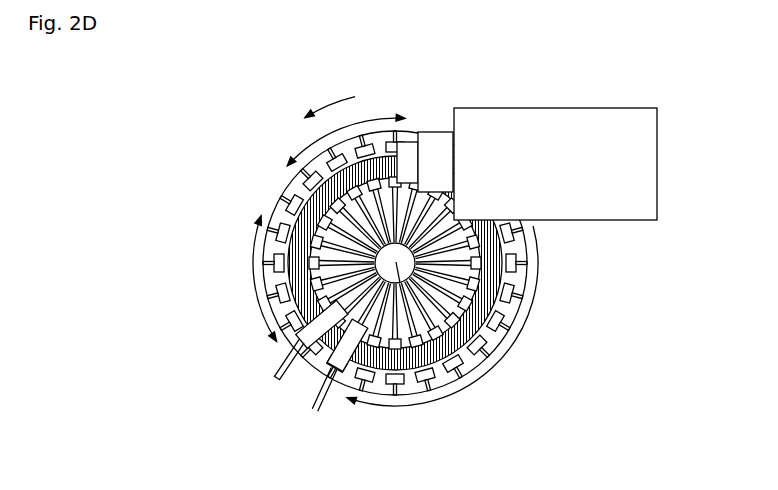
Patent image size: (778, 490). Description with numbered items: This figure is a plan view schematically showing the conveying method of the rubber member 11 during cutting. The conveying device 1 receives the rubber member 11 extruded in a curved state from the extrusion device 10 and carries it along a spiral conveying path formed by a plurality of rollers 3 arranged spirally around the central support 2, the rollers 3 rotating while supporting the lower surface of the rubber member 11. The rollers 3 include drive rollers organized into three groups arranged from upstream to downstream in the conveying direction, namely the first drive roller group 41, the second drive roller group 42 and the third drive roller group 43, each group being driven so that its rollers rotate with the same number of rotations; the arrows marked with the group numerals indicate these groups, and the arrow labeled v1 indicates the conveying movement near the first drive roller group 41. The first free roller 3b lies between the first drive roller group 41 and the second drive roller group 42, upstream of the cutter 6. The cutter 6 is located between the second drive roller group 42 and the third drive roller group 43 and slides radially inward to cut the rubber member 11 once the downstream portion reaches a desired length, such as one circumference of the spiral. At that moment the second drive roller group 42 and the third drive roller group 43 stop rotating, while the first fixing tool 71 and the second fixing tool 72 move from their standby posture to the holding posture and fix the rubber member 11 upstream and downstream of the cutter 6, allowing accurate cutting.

The conveying device 1 is at (540, 329).
The support 2 is at (490, 327).
The rollers 3 is at (280, 242).
The first free roller 3b is at (290, 191).
The cutter 6 is at (316, 369).
The extrusion device 10 is at (600, 228).
The rubber member 11 is at (398, 140).
The first drive roller group 41 is at (346, 137).
The second drive roller group 42 is at (251, 279).
The third drive roller group 43 is at (442, 316).
The first fixing tool 71 is at (275, 377).
The second fixing tool 72 is at (316, 413).
The velocity v1 is at (330, 97).